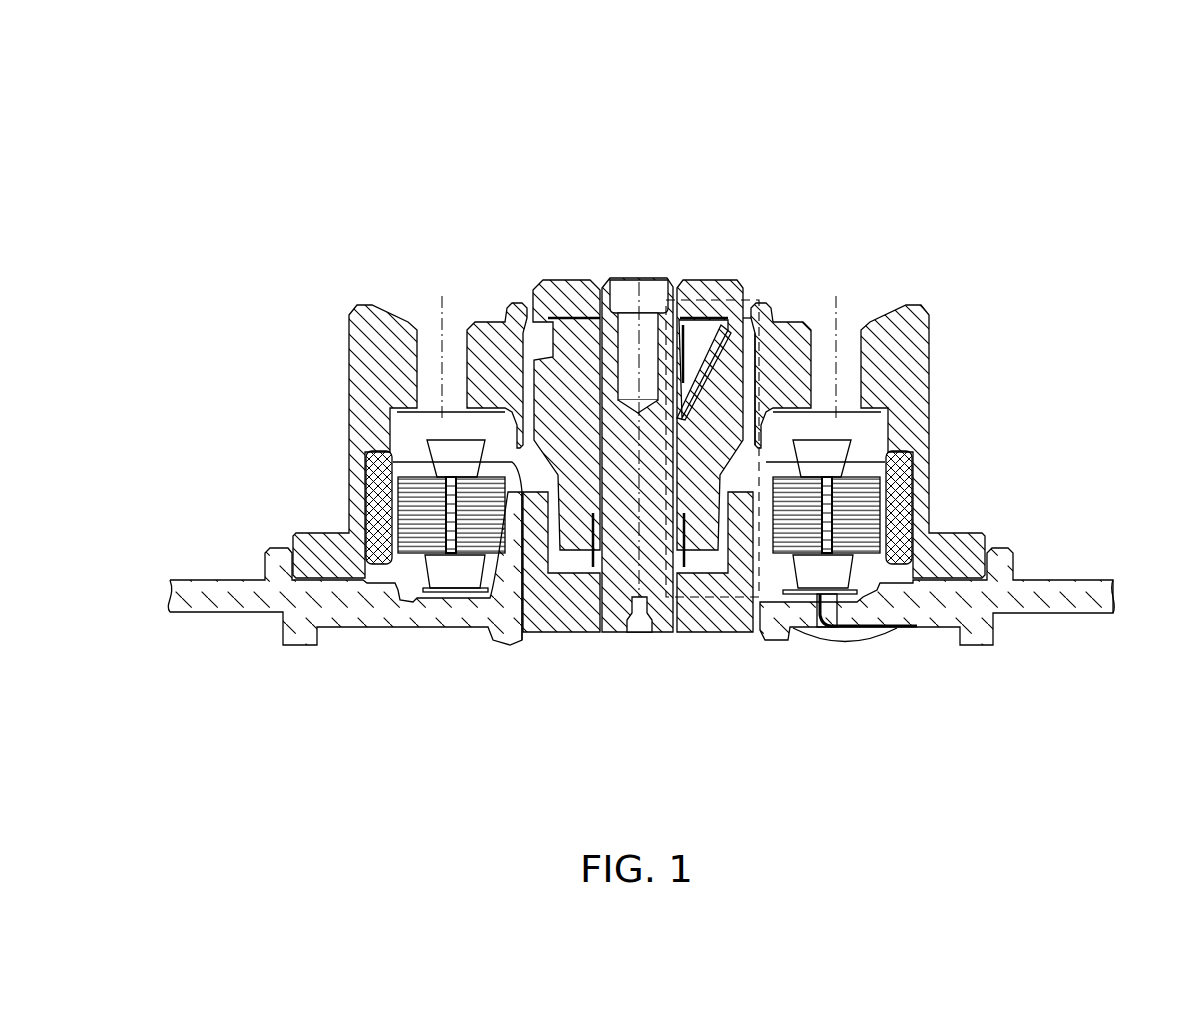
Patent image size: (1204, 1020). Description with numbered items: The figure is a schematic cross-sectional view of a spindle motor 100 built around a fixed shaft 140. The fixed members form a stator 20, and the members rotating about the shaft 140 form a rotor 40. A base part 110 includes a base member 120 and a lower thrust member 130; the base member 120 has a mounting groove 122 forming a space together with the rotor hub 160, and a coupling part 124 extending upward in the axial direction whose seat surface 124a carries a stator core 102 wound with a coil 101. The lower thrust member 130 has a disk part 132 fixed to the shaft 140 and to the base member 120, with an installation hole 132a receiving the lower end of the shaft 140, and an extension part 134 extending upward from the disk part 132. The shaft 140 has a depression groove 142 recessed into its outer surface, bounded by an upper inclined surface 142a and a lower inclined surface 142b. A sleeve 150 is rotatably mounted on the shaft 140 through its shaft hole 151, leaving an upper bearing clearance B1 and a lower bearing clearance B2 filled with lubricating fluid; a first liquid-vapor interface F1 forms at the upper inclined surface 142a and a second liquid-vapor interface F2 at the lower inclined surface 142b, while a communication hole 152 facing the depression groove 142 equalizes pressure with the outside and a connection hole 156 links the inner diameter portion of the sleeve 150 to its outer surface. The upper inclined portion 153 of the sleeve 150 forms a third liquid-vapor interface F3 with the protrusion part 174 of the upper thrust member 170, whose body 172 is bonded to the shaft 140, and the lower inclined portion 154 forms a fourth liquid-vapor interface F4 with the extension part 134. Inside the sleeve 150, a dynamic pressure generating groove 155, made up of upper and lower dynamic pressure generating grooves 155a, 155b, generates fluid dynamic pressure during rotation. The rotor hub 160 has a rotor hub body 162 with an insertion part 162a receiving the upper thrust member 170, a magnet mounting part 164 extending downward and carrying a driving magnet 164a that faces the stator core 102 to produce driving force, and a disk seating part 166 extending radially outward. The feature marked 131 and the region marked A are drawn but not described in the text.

The stator 20 is at (1057, 655).
The rotor 40 is at (350, 298).
The spindle motor 100 is at (641, 64).
The coil 101 is at (413, 528).
The stator core 102 is at (443, 600).
The base part 110 is at (350, 766).
The base member 120 is at (370, 612).
The mounting groove 122 is at (920, 630).
The coupling part 124 is at (815, 633).
The seat surface 124a is at (818, 633).
The lower thrust member 130 is at (537, 705).
The shaft head 131 is at (633, 292).
The disk part 132 is at (538, 633).
The installation hole 132a is at (680, 632).
The extension part 134 is at (515, 625).
The shaft 140 is at (678, 632).
The depression groove 142 is at (722, 300).
The upper inclined surface 142a is at (750, 328).
The lower inclined surface 142b is at (708, 630).
The sleeve 150 is at (745, 630).
The shaft hole 151 is at (653, 628).
The communication hole 152 is at (795, 440).
The upper inclined portion 153 is at (527, 302).
The lower inclined portion 154 is at (390, 468).
The dynamic pressure generating groove 155 is at (728, 128).
The upper dynamic pressure generating groove 155a is at (617, 290).
The lower dynamic pressure generating groove 155b is at (693, 300).
The connection hole 156 is at (766, 340).
The rotor hub 160 is at (1068, 258).
The rotor hub body 162 is at (925, 304).
The insertion part 162a is at (518, 395).
The magnet mounting part 164 is at (937, 482).
The driving magnet 164a is at (378, 508).
The disk seating part 166 is at (953, 538).
The upper thrust member 170 is at (612, 181).
The body 172 is at (599, 290).
The protrusion part 174 is at (533, 292).
The detail region A is at (755, 302).
The upper bearing clearance B1 is at (415, 412).
The lower bearing clearance B2 is at (600, 600).
The first liquid-vapor interface F1 is at (744, 292).
The second liquid-vapor interface F2 is at (638, 636).
The third liquid-vapor interface F3 is at (562, 294).
The fourth liquid-vapor interface F4 is at (565, 636).